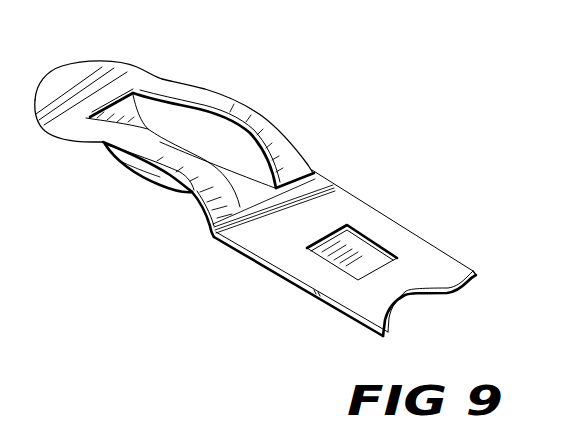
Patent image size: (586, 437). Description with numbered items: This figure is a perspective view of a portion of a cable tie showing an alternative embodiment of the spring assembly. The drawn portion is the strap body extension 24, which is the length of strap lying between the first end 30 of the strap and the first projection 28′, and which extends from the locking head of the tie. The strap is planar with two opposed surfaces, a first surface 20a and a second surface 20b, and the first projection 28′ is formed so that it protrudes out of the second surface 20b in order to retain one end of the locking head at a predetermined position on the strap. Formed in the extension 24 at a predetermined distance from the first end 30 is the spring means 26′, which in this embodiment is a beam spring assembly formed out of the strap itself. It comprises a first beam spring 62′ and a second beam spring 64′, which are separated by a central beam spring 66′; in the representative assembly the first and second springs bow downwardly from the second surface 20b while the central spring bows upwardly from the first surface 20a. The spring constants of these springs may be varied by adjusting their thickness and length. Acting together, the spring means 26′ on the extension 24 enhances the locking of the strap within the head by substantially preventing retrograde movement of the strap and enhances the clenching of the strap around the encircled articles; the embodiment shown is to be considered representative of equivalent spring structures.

The first end 30 is at (47, 80).
The spring means 26′ is at (253, 78).
The first beam spring 62′ is at (260, 117).
The central beam spring 66′ is at (150, 167).
The second beam spring 64′ is at (205, 218).
The strap body extension 24 is at (330, 203).
The first projection 28′ is at (357, 260).
The first surface 20a is at (453, 272).
The second surface 20b is at (455, 298).